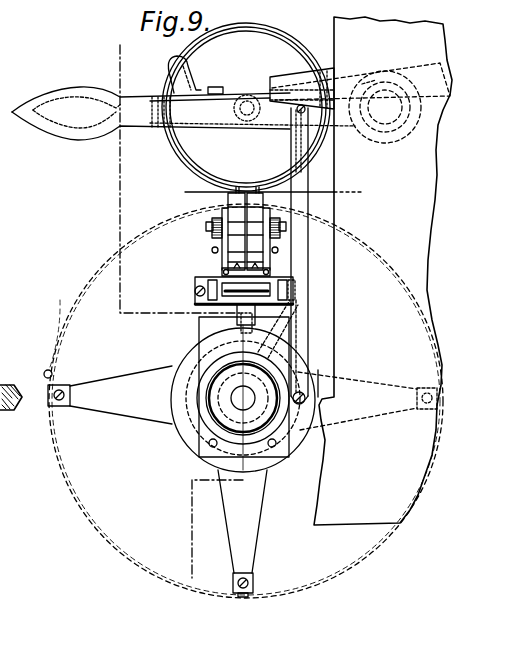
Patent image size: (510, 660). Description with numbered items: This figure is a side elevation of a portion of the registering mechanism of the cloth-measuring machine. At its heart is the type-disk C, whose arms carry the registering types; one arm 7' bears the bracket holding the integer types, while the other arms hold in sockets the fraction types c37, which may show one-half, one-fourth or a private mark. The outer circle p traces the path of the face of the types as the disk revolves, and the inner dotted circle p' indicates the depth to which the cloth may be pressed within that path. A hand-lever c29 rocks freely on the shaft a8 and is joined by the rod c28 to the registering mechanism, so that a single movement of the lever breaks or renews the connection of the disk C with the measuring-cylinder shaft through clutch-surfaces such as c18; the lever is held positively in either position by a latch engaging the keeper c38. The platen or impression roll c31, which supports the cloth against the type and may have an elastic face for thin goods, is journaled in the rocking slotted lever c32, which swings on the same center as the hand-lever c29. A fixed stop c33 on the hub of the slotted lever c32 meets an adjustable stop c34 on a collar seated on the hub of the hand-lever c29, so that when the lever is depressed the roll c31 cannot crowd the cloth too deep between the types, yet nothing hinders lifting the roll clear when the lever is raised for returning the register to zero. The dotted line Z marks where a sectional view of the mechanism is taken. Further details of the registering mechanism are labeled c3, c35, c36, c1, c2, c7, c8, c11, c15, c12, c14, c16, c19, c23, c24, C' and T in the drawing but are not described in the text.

The hand-lever c29 is at (183, 113).
The lever pivot pin c3 is at (150, 98).
The slotted lever c32 is at (163, 97).
The impression roll c31 is at (262, 107).
The keeper c38 is at (302, 120).
The fixed stop c33 is at (390, 80).
The adjustable stop c34 is at (366, 86).
The shaft a8 is at (385, 107).
The stop pin c35 is at (238, 190).
The stop pin c36 is at (258, 190).
The number drum c1 is at (228, 210).
The number drum c2 is at (263, 208).
The gear c7 is at (214, 220).
The gear c8 is at (272, 220).
The pawl c11 is at (207, 228).
The pivot c15 is at (212, 250).
The plate c12 is at (222, 271).
The base box c14 is at (244, 305).
The screw c16 is at (247, 319).
The rod c28 is at (309, 256).
The frame plate T is at (383, 271).
The hub ring c19 is at (243, 398).
The clutch-surface c18 is at (239, 396).
The hub boss c23 is at (243, 390).
The screw holes c24 is at (242, 447).
The arm 7' is at (233, 386).
The arms C' is at (242, 455).
The fraction types c37 is at (50, 373).
The disk C is at (325, 383).
The path of the types p is at (246, 401).
The indentation circle p' is at (202, 419).
The section line Z is at (175, 311).